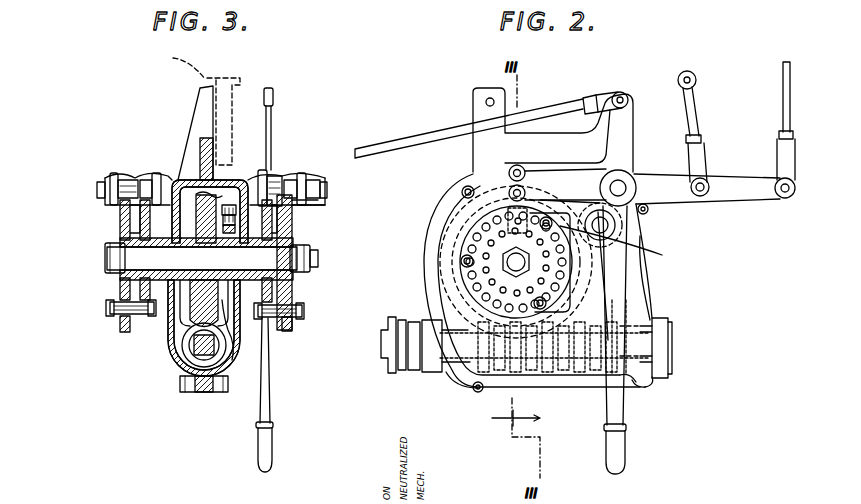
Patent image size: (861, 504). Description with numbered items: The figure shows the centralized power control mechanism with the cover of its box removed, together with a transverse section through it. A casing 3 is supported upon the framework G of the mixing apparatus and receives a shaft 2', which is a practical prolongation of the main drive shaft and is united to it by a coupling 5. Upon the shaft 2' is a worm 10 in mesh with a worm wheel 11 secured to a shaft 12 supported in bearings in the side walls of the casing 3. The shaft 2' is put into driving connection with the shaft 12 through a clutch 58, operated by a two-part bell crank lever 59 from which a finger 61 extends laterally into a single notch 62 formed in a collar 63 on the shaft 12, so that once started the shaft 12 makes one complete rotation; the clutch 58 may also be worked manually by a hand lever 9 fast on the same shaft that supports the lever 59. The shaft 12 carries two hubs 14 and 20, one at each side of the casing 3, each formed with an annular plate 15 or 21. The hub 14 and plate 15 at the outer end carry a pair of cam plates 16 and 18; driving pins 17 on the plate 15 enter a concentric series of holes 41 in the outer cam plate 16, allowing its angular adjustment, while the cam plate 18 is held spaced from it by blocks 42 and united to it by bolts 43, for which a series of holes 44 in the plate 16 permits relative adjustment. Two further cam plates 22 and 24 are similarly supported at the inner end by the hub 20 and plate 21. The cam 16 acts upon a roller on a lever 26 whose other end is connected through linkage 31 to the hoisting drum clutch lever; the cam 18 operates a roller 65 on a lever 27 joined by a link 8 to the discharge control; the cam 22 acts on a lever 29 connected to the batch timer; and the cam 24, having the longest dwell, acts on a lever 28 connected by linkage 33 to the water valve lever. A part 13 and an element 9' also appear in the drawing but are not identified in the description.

In FIG. 3, the shaft 2' is at (193, 384).
In FIG. 2, the shaft 2' is at (445, 393).
In FIG. 3, the casing 3 is at (238, 365).
In FIG. 2, the casing 3 is at (652, 270).
In FIG. 2, the coupling 5 is at (388, 370).
In FIG. 2, the link 8 is at (406, 140).
In FIG. 3, the hand lever 9 is at (280, 395).
In FIG. 2, the hand lever 9 is at (638, 340).
In FIG. 3, the arm 9' is at (221, 169).
In FIG. 2, the arm 9' is at (570, 191).
In FIG. 3, the worm 10 is at (172, 370).
In FIG. 2, the worm 10 is at (494, 385).
In FIG. 3, the worm wheel 11 is at (192, 312).
In FIG. 2, the worm wheel 11 is at (568, 265).
In FIG. 3, the shaft 12 is at (150, 260).
In FIG. 2, the shaft 12 is at (514, 272).
In FIG. 3, the flange plate 13 is at (296, 245).
In FIG. 3, the hub 14 is at (302, 258).
In FIG. 3, the annular plate 15 is at (300, 272).
In FIG. 3, the cam plate 16 is at (296, 206).
In FIG. 2, the cam plate 16 is at (630, 240).
In FIG. 3, the driving pin 17 is at (285, 236).
In FIG. 2, the driving pin 17 is at (462, 280).
In FIG. 3, the cam plate 18 is at (272, 322).
In FIG. 3, the hub 20 is at (110, 275).
In FIG. 3, the annular plate 21 is at (126, 290).
In FIG. 3, the cam plate 22 is at (124, 218).
In FIG. 2, the cam plate 22 is at (446, 232).
In FIG. 3, the cam plate 24 is at (124, 330).
In FIG. 2, the cam plate 24 is at (555, 375).
In FIG. 3, the lever 26 is at (302, 182).
In FIG. 2, the lever 26 is at (538, 182).
In FIG. 3, the lever 27 is at (269, 88).
In FIG. 2, the lever 27 is at (618, 145).
In FIG. 3, the lever 28 is at (114, 178).
In FIG. 2, the lever 28 is at (740, 202).
In FIG. 3, the lever 29 is at (156, 178).
In FIG. 2, the linkage 31 is at (692, 105).
In FIG. 2, the linkage 33 is at (782, 82).
In FIG. 3, the holes 41 is at (280, 290).
In FIG. 2, the holes 41 is at (464, 192).
In FIG. 3, the spacer blocks 42 is at (285, 318).
In FIG. 3, the bolts 43 is at (108, 308).
In FIG. 2, the bolts 43 is at (460, 261).
In FIG. 2, the holes 44 is at (482, 232).
In FIG. 2, the clutch 58 is at (636, 390).
In FIG. 2, the two-part bell crank lever 59 is at (636, 300).
In FIG. 3, the finger 61 is at (228, 205).
In FIG. 3, the notch 62 is at (180, 183).
In FIG. 3, the collar 63 is at (240, 325).
In FIG. 3, the roller 65 is at (276, 176).
In FIG. 3, the framework G is at (197, 109).